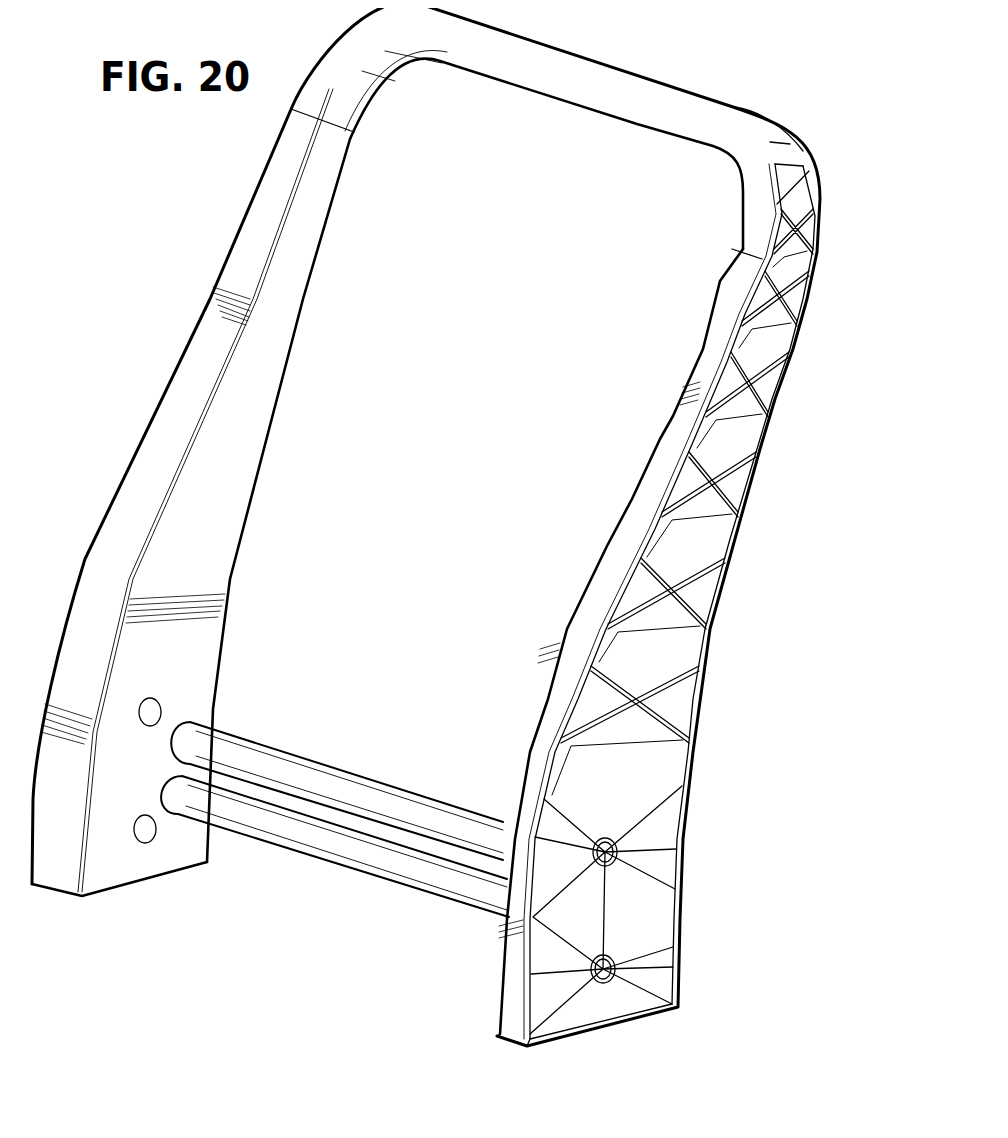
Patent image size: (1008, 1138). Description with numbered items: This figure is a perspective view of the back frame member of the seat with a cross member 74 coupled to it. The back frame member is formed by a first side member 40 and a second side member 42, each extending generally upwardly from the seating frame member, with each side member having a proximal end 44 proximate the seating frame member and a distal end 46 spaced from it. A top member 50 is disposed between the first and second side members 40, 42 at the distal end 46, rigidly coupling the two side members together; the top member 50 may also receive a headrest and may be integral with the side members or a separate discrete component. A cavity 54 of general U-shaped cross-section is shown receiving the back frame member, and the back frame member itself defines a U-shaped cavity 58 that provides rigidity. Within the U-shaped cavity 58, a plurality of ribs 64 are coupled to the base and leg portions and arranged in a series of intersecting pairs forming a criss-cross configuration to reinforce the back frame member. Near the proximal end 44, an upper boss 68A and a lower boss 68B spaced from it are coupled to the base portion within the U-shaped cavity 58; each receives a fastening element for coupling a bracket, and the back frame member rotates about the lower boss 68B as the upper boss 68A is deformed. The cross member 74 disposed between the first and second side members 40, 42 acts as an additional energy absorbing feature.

The first side member 40 is at (810, 330).
The second side member 42 is at (212, 233).
The proximal end 44 is at (703, 992).
The distal end 46 is at (832, 192).
The top member 50 is at (560, 62).
The cavity 54 is at (310, 210).
The U-shaped cavity 58 is at (648, 746).
The ribs 64 is at (733, 455).
The upper boss 68A is at (603, 958).
The lower boss 68B is at (605, 986).
The cross member 74 is at (316, 778).